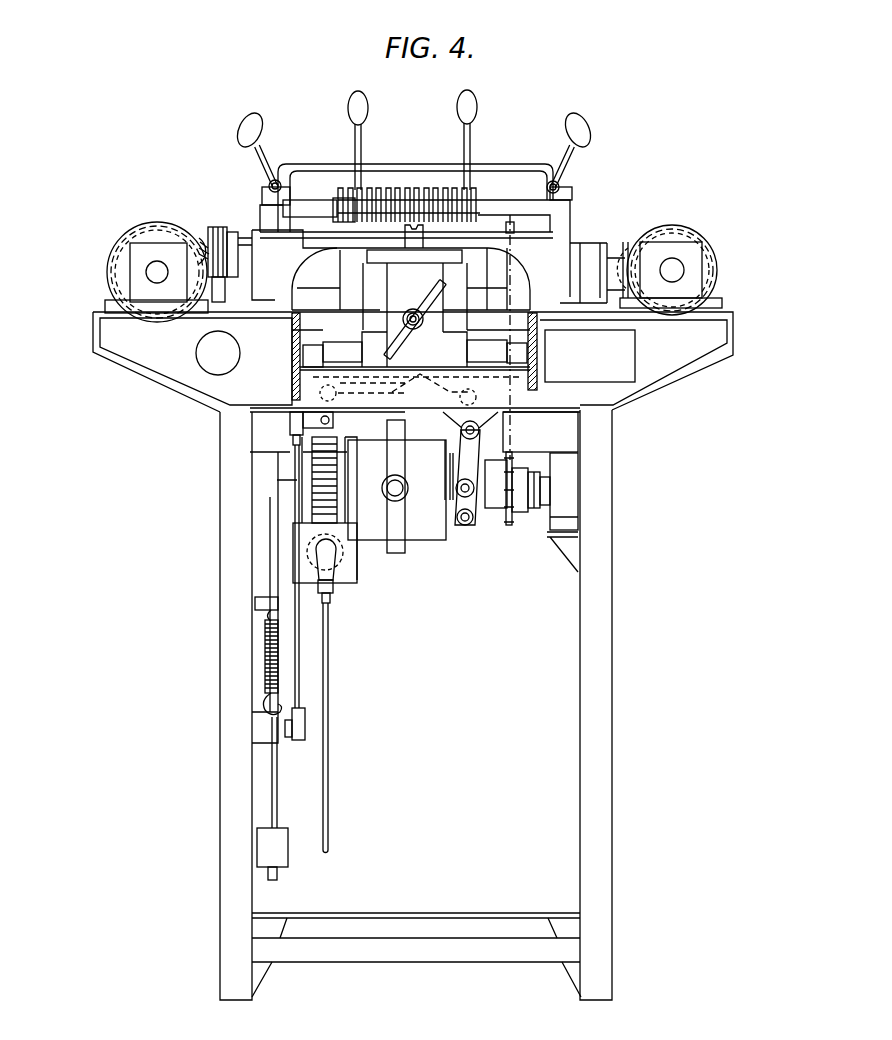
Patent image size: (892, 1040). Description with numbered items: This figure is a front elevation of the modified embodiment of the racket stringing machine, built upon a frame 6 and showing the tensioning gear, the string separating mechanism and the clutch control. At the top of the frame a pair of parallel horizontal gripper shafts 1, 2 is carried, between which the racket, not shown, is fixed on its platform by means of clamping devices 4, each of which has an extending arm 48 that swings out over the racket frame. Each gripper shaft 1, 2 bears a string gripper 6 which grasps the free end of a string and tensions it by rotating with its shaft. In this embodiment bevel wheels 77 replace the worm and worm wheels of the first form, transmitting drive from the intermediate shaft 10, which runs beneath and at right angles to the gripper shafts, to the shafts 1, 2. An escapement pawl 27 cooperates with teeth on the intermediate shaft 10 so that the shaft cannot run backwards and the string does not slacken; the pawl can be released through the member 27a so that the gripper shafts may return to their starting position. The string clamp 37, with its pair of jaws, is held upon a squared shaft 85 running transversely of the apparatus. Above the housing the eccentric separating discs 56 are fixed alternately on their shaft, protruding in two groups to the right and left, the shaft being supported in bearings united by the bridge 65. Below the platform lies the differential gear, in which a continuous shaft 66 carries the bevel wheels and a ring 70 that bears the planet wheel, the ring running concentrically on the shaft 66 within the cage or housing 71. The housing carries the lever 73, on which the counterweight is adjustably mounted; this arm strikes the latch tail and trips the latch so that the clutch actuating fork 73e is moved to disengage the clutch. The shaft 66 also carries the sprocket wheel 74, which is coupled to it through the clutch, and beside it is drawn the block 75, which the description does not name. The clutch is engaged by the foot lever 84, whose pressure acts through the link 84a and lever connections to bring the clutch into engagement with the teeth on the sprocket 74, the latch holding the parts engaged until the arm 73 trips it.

The gripper shaft 1 is at (152, 277).
The gripper shaft 2 is at (672, 270).
The clamping device 4 is at (253, 142).
The string gripper 6 is at (160, 606).
The intermediate shaft 10 is at (411, 289).
The escapement pawl 27 is at (218, 227).
The handle operating member 27a is at (232, 352).
The string clamp 37 is at (434, 285).
The extending arm 48 is at (300, 208).
The separating members 56 is at (410, 187).
The bridge 65 is at (510, 165).
The continuous shaft 66 is at (543, 487).
The ring 70 is at (392, 486).
The cage or housing 71 is at (430, 540).
The lever 73 is at (411, 415).
The clutch actuating fork 73e is at (463, 466).
The sprocket wheel 74 is at (510, 527).
The bearing block 75 is at (512, 433).
The bevel wheels 77 is at (202, 237).
The foot lever 84 is at (277, 790).
The link 84a is at (300, 673).
The squared shaft 85 is at (480, 347).